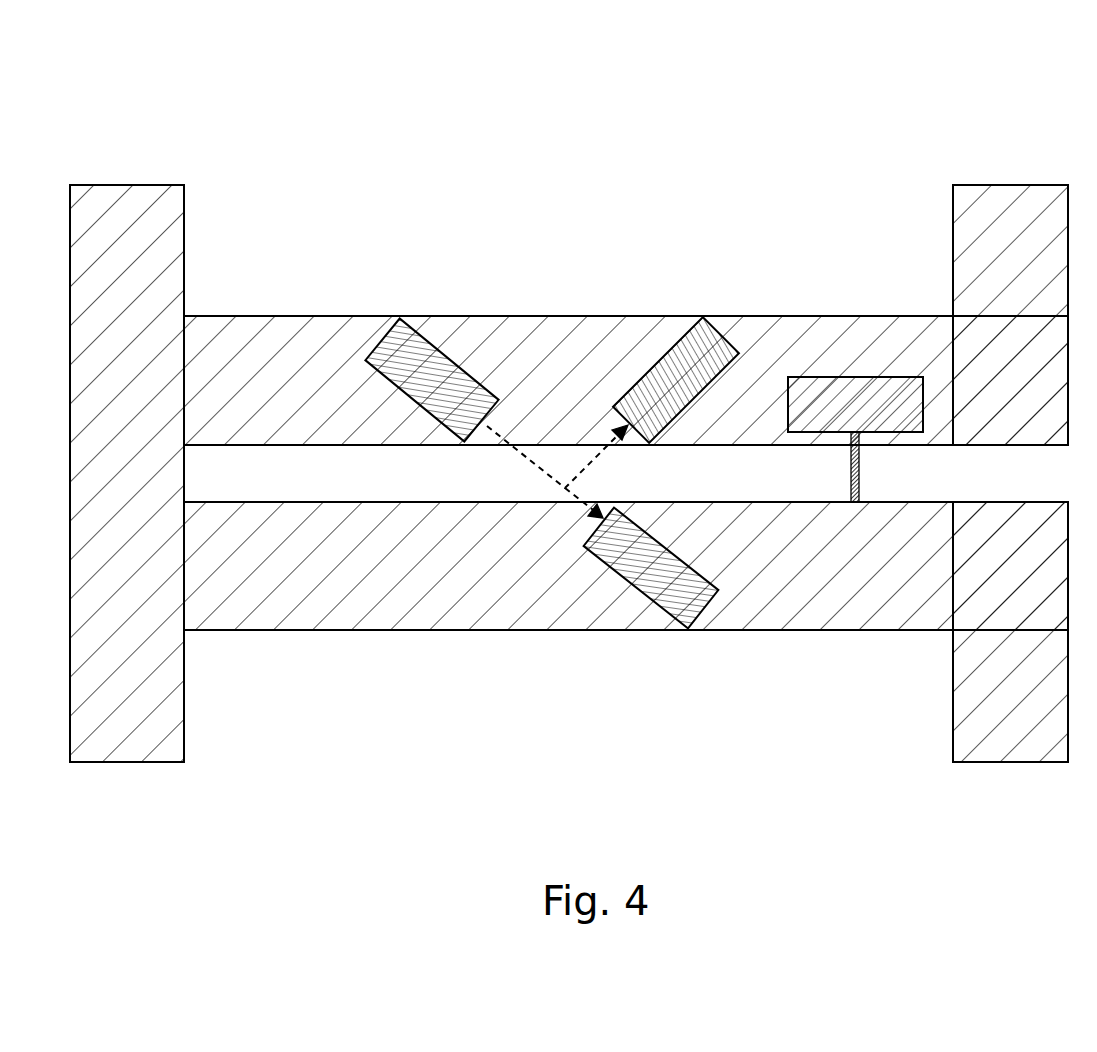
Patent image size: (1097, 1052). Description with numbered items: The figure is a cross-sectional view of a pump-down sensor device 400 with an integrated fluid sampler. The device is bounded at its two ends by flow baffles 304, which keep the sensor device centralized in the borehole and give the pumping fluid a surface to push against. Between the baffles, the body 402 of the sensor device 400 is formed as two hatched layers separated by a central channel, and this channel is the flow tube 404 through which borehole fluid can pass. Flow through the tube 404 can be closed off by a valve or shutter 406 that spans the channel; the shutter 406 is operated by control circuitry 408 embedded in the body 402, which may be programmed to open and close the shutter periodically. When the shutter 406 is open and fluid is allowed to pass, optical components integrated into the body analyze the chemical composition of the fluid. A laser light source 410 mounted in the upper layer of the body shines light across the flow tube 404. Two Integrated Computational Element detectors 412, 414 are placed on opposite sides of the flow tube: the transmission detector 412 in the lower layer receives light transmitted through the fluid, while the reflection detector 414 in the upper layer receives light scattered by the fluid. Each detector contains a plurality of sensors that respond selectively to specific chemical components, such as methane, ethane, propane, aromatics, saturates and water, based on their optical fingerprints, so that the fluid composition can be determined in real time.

The pump-down sensor device 400 is at (330, 68).
The flow baffle 304 is at (125, 185).
The body 402 is at (566, 316).
The flow tube 404 is at (393, 500).
The shutter 406 is at (851, 462).
The control circuitry 408 is at (858, 377).
The laser light source 410 is at (435, 345).
The ICE Core detector 412 is at (627, 581).
The ICE Core detector 414 is at (727, 340).